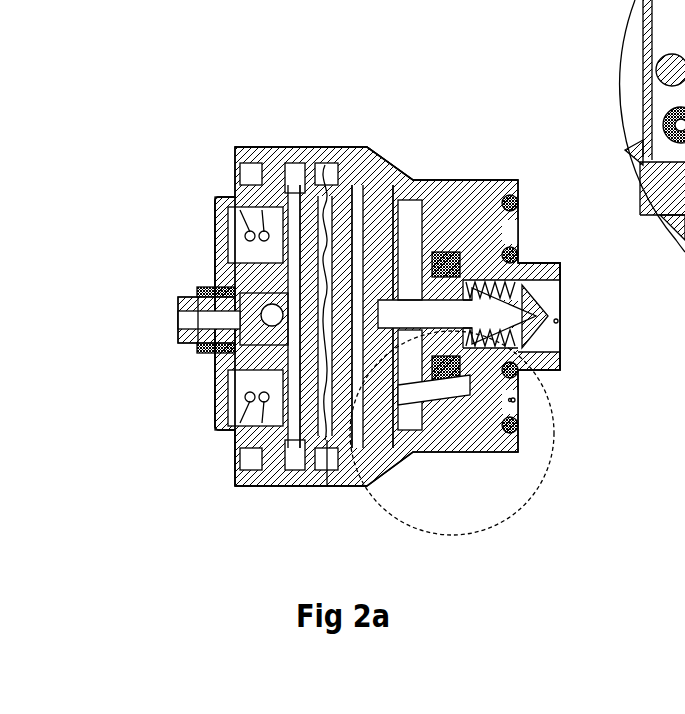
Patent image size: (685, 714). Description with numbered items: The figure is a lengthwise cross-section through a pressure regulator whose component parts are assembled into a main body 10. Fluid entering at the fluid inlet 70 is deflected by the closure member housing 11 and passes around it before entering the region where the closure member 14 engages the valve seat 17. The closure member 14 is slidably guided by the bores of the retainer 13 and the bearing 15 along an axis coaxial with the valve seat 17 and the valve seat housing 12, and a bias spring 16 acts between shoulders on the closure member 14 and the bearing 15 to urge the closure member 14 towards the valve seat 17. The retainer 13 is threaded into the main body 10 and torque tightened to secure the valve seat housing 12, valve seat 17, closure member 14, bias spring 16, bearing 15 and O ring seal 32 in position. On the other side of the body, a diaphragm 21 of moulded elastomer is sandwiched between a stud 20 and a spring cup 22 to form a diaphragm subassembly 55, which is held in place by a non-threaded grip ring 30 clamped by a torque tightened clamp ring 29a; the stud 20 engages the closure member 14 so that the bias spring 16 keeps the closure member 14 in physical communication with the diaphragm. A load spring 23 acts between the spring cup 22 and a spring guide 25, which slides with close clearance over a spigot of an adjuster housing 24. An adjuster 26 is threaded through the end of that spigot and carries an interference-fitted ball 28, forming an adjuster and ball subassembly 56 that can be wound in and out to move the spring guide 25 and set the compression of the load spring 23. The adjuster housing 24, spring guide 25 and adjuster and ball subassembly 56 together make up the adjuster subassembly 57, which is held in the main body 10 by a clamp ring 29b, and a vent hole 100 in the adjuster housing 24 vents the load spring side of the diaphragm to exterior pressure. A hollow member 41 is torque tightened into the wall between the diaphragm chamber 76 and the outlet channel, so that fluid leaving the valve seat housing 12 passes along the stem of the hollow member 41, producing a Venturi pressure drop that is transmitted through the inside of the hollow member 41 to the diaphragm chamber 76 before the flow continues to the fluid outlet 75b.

The vent hole 100 is at (234, 192).
The diaphragm subassembly 55 is at (387, 42).
The spring cup 22 is at (308, 168).
The diaphragm 21 is at (326, 185).
The stud 20 is at (352, 235).
The load spring 23 is at (245, 200).
The main body 10 is at (378, 185).
The retainer 13 is at (413, 185).
The valve seat housing 12 is at (432, 246).
The O ring seal 32 is at (450, 240).
The bias spring 16 is at (522, 270).
The bearing 15 is at (560, 266).
The closure member 14 is at (548, 312).
The fluid inlet 70 is at (558, 322).
The closure member housing 11 is at (553, 343).
The adjuster housing 24 is at (215, 230).
The spring guide 25 is at (245, 268).
The adjuster subassembly 57 is at (93, 393).
The adjuster 26 is at (183, 337).
The adjuster and ball subassembly 56 is at (125, 410).
The ball 28 is at (222, 358).
The fluid outlet 75b is at (515, 401).
The clamp ring 29a is at (283, 487).
The clamp ring 29b is at (238, 487).
The grip ring 30 is at (327, 487).
The diaphragm chamber 76 is at (358, 434).
The hollow member 41 is at (444, 418).
The valve seat 17 is at (511, 402).